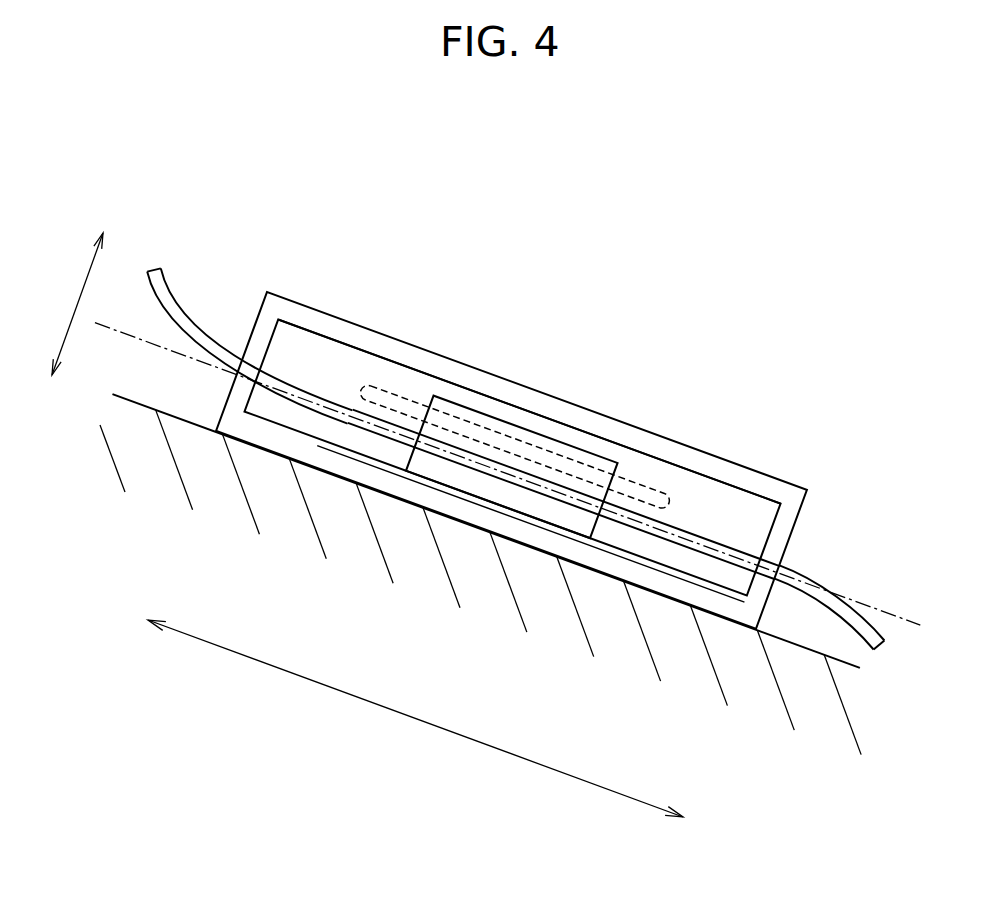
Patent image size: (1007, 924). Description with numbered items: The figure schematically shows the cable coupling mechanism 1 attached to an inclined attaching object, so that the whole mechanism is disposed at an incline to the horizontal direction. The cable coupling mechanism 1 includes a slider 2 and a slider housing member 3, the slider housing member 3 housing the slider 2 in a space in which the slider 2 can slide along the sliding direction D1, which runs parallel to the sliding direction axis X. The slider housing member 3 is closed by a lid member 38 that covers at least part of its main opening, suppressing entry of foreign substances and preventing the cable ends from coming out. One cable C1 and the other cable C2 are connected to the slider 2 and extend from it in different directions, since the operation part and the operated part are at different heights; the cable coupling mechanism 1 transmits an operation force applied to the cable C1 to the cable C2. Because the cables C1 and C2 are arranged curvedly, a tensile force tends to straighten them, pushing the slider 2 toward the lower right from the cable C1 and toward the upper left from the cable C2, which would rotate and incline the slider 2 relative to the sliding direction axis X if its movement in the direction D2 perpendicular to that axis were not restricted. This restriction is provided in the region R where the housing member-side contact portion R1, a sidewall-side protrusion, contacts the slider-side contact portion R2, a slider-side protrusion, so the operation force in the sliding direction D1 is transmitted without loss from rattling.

The cable coupling mechanism 1 is at (778, 387).
The slider 2 is at (405, 458).
The slider housing member 3 is at (808, 502).
The lid member 38 is at (505, 392).
The sliding direction axis X is at (897, 615).
The sliding direction D1 is at (418, 721).
The direction perpendicular to the sliding direction axis D2 is at (84, 285).
The cable C1 is at (852, 612).
The cable C2 is at (190, 328).
The region R is at (563, 385).
The housing member-side contact portion R1 is at (377, 397).
The slider-side contact portion R2 is at (448, 443).